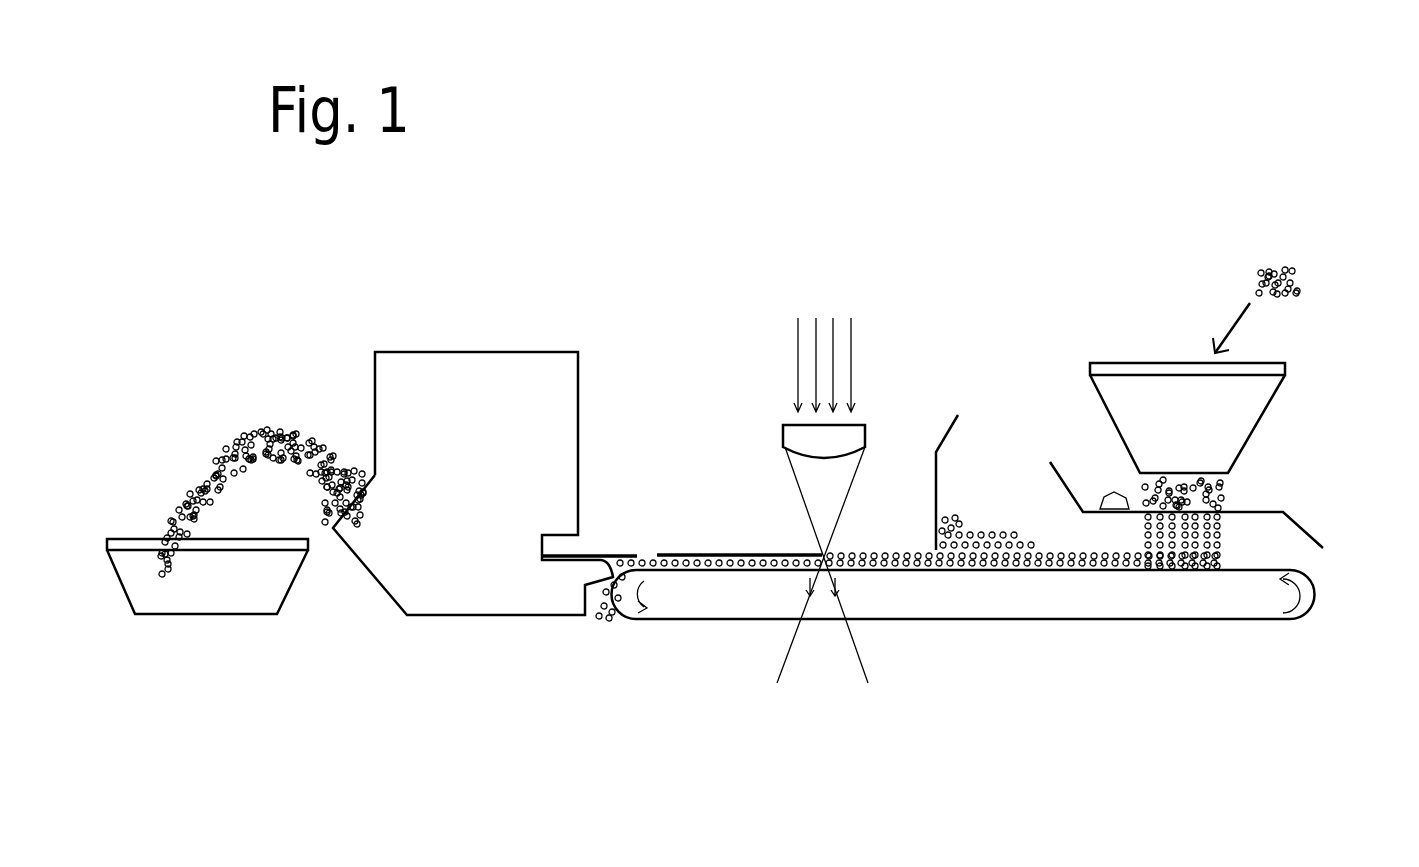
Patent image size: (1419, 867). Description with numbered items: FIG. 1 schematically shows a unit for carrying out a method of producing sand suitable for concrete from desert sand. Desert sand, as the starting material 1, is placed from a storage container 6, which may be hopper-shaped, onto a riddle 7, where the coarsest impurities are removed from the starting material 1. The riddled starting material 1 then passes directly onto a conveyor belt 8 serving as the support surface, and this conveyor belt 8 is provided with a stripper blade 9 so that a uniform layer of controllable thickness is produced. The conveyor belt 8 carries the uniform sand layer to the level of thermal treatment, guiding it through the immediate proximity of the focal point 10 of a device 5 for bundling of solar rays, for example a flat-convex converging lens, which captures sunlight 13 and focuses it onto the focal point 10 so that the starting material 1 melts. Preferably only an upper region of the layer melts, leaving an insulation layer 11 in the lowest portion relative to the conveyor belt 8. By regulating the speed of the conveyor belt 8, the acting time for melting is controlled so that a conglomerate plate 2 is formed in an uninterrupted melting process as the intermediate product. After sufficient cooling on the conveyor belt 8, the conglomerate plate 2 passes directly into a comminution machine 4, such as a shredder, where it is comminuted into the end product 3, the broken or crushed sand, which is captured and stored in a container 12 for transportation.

The starting material 1 is at (1299, 272).
The conglomerate plate 2 is at (738, 555).
The end product 3 is at (220, 472).
The comminution machine 4 is at (505, 385).
The device for bundling of solar rays 5 is at (818, 437).
The storage container 6 is at (1228, 420).
The riddle 7 is at (1253, 512).
The conveyor belt 8 is at (1158, 602).
The stripper blade 9 is at (935, 503).
The focal point 10 is at (825, 562).
The insulation layer 11 is at (688, 569).
The container 12 is at (213, 583).
The sunlight 13 is at (852, 338).